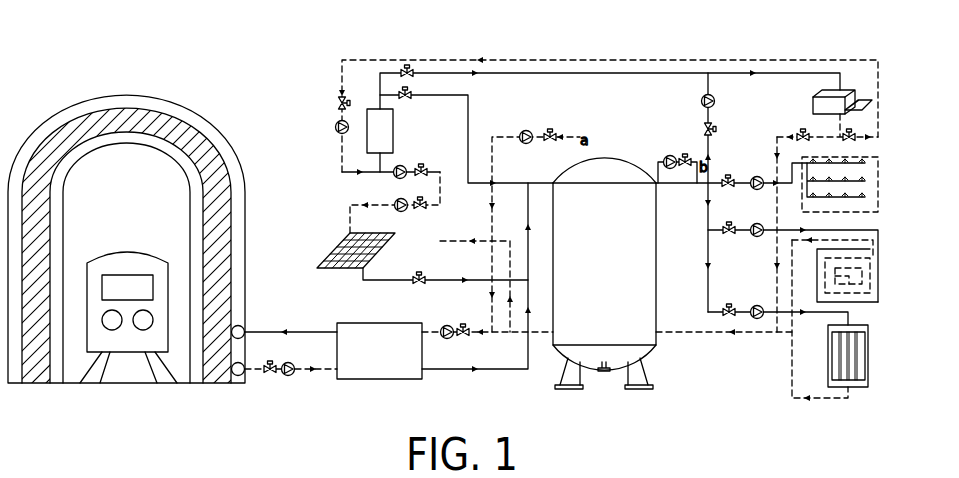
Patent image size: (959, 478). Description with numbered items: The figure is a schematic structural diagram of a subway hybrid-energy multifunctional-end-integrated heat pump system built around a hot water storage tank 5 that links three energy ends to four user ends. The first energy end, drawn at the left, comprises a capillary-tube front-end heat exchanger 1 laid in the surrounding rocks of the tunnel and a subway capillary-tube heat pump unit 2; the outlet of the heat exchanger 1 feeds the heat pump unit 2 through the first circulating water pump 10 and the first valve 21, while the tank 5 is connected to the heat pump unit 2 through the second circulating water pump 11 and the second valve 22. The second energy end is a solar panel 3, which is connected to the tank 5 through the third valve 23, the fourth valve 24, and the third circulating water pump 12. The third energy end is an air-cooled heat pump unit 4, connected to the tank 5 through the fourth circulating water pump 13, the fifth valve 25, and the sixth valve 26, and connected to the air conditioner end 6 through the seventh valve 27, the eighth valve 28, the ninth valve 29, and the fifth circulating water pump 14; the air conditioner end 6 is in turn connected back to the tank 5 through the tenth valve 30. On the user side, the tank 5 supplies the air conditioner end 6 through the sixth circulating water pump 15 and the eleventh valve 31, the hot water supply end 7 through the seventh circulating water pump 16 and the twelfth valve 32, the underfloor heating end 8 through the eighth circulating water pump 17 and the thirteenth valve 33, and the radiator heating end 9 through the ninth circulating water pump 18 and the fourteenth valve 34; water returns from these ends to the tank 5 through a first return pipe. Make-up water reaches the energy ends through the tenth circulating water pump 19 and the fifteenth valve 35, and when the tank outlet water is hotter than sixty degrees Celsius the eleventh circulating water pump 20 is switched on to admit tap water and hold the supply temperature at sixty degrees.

The capillary-tube front-end heat exchanger 1 is at (243, 323).
The subway capillary-tube heat pump unit 2 is at (345, 322).
The solar panel 3 is at (328, 253).
The air-cooled heat pump unit 4 is at (393, 140).
The hot water storage tank 5 is at (604, 160).
The air conditioner end 6 is at (813, 104).
The hot water supply end 7 is at (880, 187).
The underfloor heating end 8 is at (878, 263).
The radiator heating end 9 is at (868, 353).
The first circulating water pump 10 is at (289, 363).
The second circulating water pump 11 is at (447, 326).
The third circulating water pump 12 is at (401, 212).
The fourth circulating water pump 13 is at (400, 166).
The fifth circulating water pump 14 is at (340, 125).
The sixth circulating water pump 15 is at (712, 97).
The seventh circulating water pump 16 is at (760, 178).
The eighth circulating water pump 17 is at (760, 225).
The ninth circulating water pump 18 is at (760, 307).
The tenth circulating water pump 19 is at (529, 131).
The eleventh circulating water pump 20 is at (668, 156).
The first valve 21 is at (268, 362).
The second valve 22 is at (464, 326).
The third valve 23 is at (420, 287).
The fourth valve 24 is at (421, 212).
The fifth valve 25 is at (421, 166).
The sixth valve 26 is at (409, 98).
The seventh valve 27 is at (410, 77).
The eighth valve 28 is at (340, 91).
The ninth valve 29 is at (851, 141).
The tenth valve 30 is at (805, 141).
The eleventh valve 31 is at (712, 126).
The twelfth valve 32 is at (723, 178).
The thirteenth valve 33 is at (724, 225).
The fourteenth valve 34 is at (724, 307).
The fifteenth valve 35 is at (552, 131).